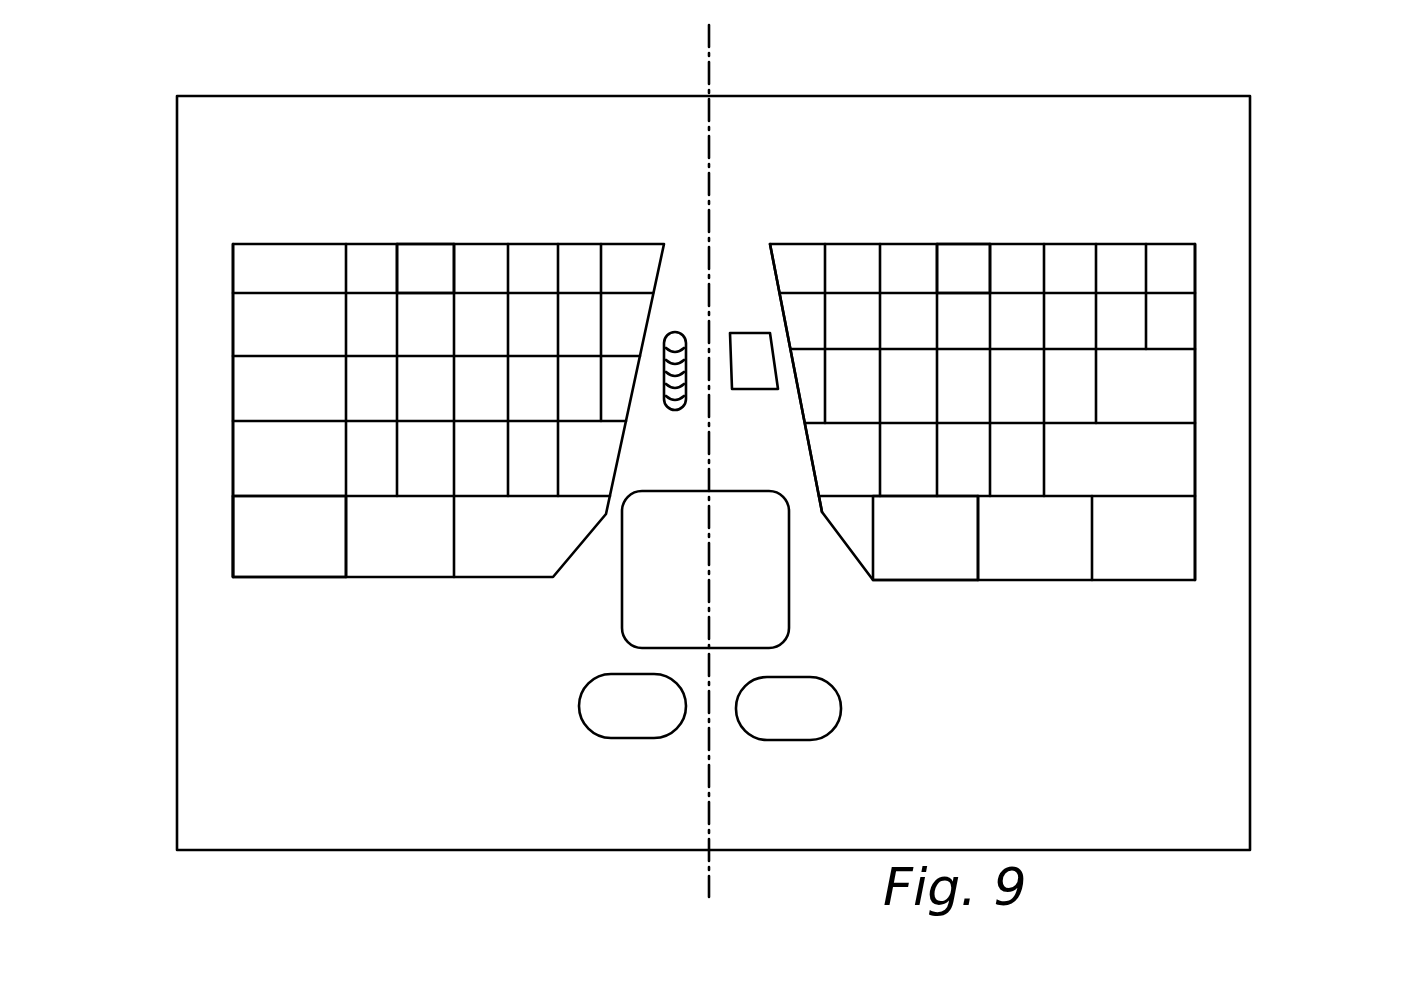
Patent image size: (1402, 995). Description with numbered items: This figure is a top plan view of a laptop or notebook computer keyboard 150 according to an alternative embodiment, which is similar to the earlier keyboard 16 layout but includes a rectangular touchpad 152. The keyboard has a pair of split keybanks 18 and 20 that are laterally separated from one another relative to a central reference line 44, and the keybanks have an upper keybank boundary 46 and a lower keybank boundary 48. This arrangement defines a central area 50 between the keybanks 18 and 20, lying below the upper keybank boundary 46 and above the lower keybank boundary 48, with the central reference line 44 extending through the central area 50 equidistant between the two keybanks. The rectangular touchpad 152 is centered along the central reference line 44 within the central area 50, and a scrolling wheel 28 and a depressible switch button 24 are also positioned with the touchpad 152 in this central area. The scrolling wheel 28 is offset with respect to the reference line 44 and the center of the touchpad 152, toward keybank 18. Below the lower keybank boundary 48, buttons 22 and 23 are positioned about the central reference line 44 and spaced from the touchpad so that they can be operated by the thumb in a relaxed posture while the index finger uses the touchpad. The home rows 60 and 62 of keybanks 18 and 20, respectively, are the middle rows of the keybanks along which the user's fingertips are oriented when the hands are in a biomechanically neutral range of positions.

The keyboard 16 is at (206, 266).
The keybank 18 is at (278, 236).
The keybank 20 is at (1119, 236).
The button 22 is at (580, 702).
The button 23 is at (830, 733).
The depressible switch button 24 is at (742, 332).
The scrolling wheel 28 is at (674, 332).
The central reference line 44 is at (711, 82).
The upper keybank boundary 46 is at (428, 243).
The lower keybank boundary 48 is at (335, 578).
The central area 50 is at (763, 284).
The home row 60 is at (233, 383).
The home row 62 is at (1196, 365).
The laptop or notebook computer keyboard 150 is at (1302, 206).
The rectangular touchpad 152 is at (780, 572).